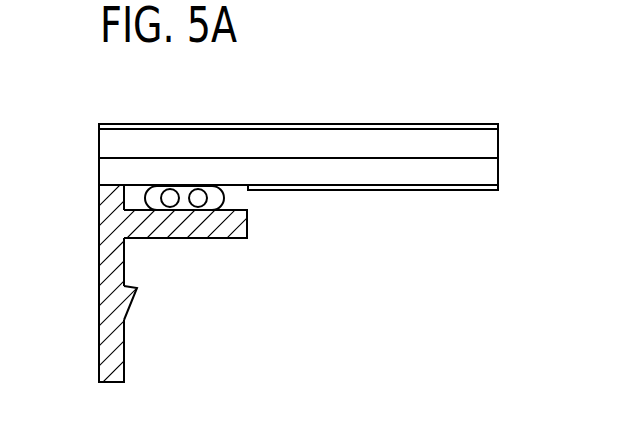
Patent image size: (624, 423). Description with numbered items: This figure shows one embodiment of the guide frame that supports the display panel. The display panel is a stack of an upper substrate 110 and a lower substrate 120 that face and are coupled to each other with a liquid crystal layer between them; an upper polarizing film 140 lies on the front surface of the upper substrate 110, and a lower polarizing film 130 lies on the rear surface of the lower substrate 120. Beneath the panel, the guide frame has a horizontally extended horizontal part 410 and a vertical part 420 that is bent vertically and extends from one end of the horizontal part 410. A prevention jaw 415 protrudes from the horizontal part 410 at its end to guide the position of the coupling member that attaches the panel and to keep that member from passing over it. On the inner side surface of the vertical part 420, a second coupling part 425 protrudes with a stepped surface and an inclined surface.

The upper polarizing film 140 is at (462, 124).
The upper substrate 110 is at (492, 138).
The lower substrate 120 is at (492, 166).
The lower polarizing film 130 is at (462, 192).
The horizontal part 410 is at (245, 222).
The prevention jaw 415 is at (110, 200).
The vertical part 420 is at (110, 279).
The second coupling part 425 is at (125, 295).